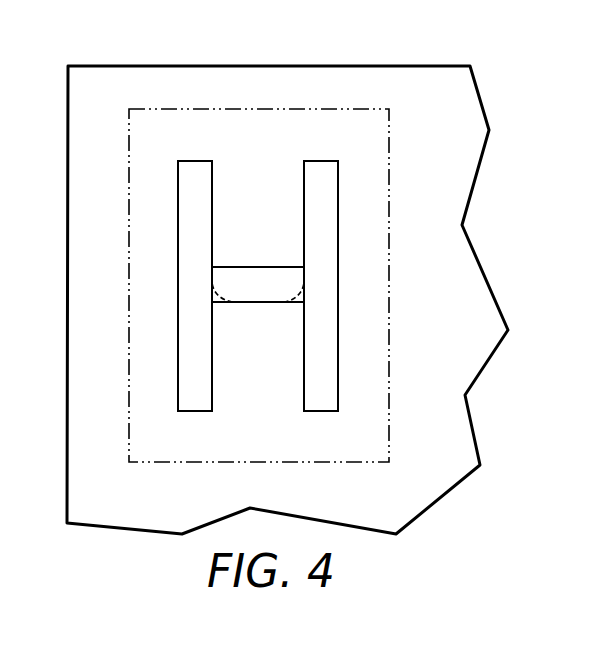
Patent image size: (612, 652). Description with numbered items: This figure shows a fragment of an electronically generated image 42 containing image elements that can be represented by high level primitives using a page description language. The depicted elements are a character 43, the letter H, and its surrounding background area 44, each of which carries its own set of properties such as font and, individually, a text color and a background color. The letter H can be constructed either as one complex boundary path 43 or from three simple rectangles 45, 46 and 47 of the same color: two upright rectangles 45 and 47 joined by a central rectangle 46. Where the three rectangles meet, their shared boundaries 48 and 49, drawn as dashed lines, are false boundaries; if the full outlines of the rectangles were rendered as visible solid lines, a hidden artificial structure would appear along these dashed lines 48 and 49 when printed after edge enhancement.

The image 42 is at (160, 66).
The character 43 is at (338, 345).
The background area 44 is at (389, 220).
The simple rectangle 45 is at (197, 205).
The simple rectangle 46 is at (258, 281).
The simple rectangle 47 is at (318, 207).
The boundary 48 is at (232, 302).
The boundary 49 is at (285, 302).